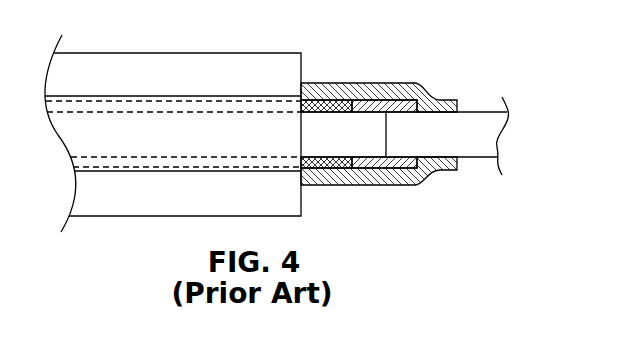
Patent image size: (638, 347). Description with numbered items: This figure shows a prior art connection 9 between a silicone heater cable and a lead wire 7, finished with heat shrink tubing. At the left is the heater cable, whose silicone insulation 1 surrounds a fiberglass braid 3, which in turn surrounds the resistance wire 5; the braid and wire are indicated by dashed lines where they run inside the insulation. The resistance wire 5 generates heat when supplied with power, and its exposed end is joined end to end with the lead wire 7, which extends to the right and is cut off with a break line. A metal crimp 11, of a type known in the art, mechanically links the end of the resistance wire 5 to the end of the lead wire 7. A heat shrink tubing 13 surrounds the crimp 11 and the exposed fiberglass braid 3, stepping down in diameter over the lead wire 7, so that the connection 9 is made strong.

The silicone insulation 1 is at (240, 67).
The fiberglass braid 3 is at (333, 160).
The resistance wire 5 is at (350, 145).
The lead wire 7 is at (472, 158).
The connection 9 is at (389, 125).
The metal crimp 11 is at (395, 165).
The heat shrink tubing 13 is at (443, 95).